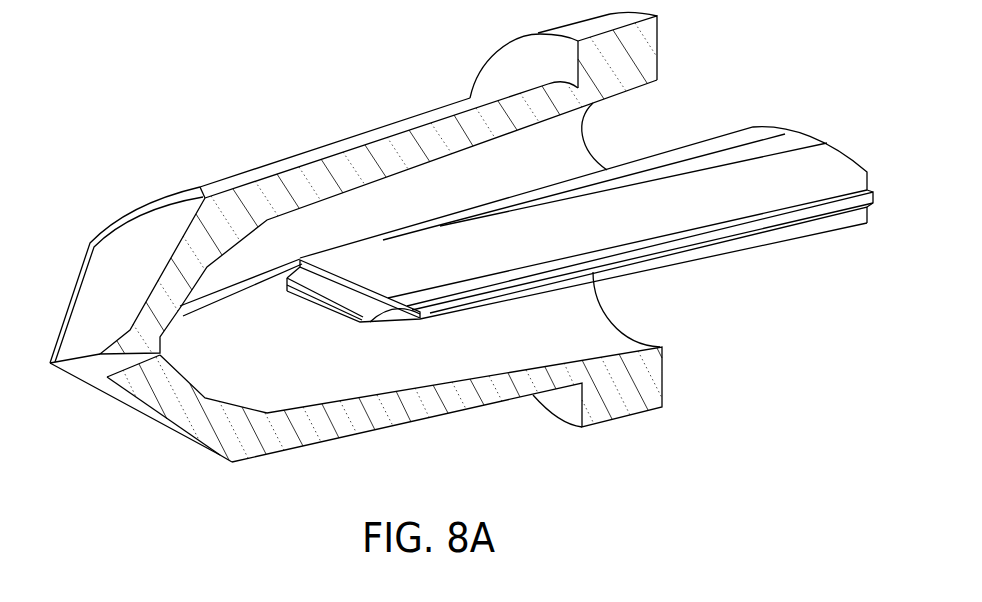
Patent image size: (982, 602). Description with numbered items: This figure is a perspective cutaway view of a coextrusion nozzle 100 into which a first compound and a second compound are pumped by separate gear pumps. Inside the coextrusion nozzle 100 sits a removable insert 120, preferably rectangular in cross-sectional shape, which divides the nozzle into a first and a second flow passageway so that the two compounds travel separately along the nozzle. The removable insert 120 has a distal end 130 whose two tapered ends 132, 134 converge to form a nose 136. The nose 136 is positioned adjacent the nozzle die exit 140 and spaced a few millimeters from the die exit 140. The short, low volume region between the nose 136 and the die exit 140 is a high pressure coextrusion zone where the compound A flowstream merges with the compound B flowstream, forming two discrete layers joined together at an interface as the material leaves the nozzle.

The coextrusion nozzle 100 is at (254, 105).
The removable insert 120 is at (701, 137).
The distal end 130 is at (541, 284).
The tapered end 132 is at (366, 256).
The tapered end 134 is at (398, 316).
The nose 136 is at (352, 312).
The nozzle die exit 140 is at (97, 354).